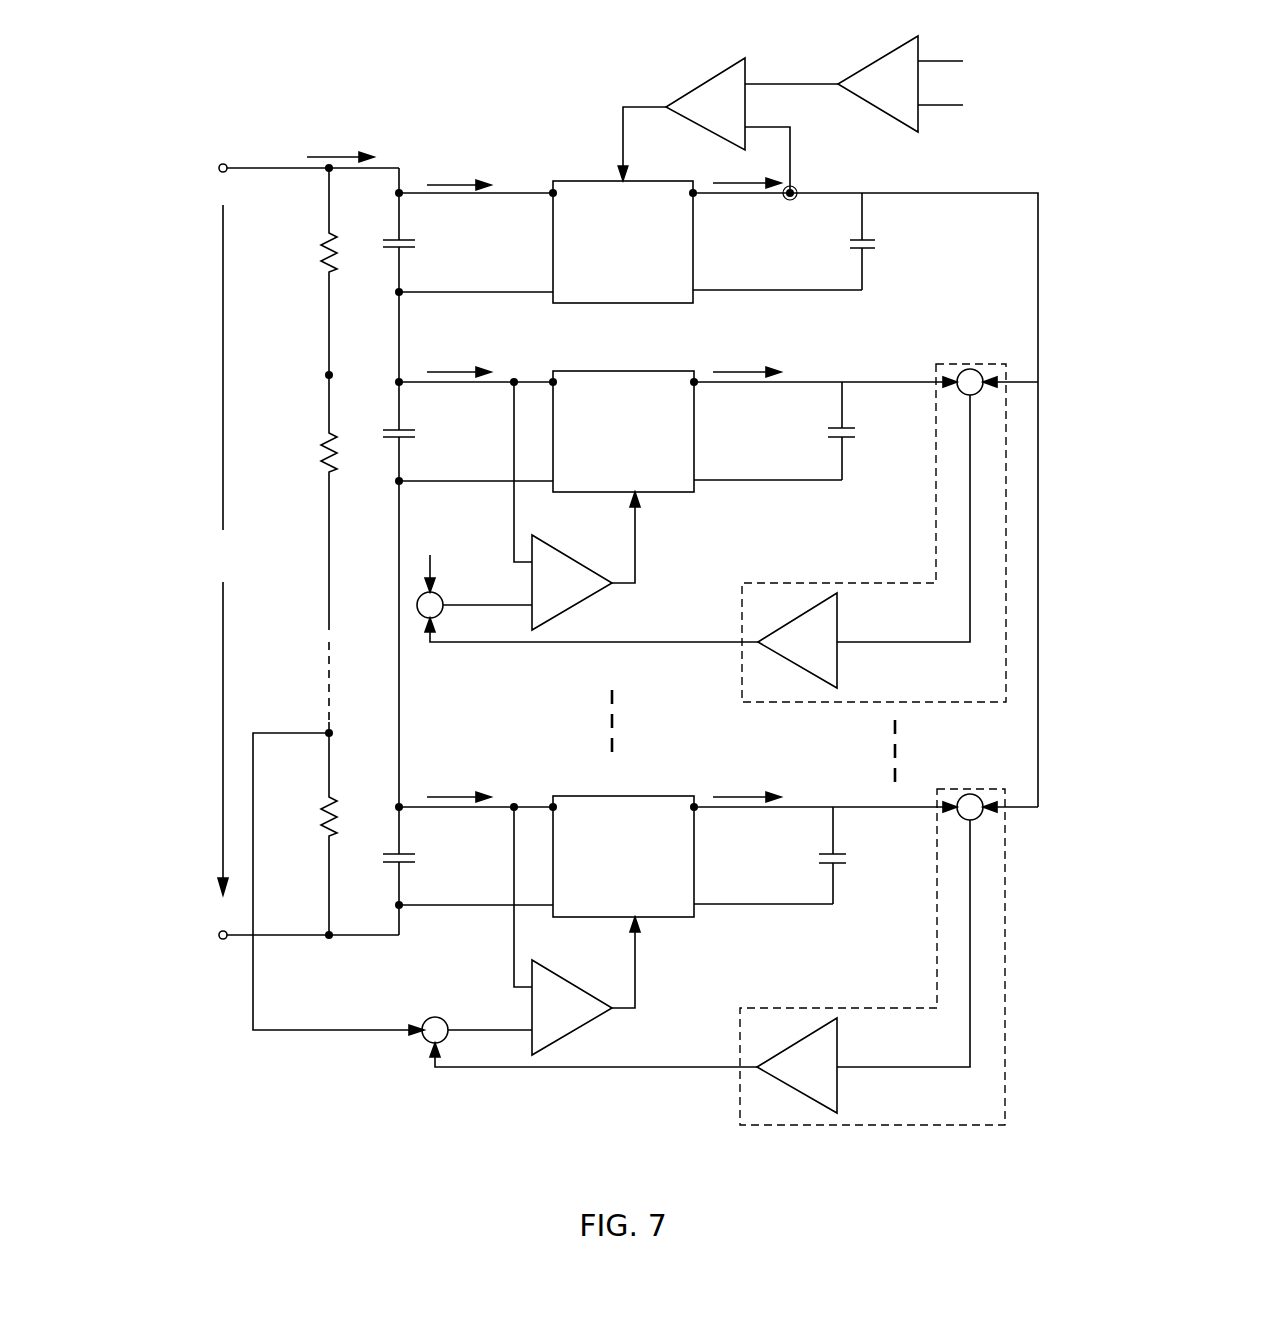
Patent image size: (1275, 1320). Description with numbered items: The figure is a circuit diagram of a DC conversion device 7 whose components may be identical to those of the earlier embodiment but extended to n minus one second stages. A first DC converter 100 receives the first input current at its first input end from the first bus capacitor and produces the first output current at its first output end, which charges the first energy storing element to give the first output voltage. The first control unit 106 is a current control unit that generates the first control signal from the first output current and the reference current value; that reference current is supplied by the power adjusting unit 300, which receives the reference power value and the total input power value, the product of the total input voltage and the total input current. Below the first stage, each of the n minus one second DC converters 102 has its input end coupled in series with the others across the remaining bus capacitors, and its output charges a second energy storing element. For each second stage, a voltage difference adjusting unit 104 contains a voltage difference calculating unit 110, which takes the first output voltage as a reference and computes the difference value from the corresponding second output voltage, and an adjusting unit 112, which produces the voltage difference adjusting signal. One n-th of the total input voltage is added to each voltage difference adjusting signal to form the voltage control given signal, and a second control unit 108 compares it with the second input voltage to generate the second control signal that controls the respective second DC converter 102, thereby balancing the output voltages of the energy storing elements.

The DC conversion device 7 is at (387, 29).
The first DC converter 100 is at (572, 181).
The second DC converter 102 is at (572, 371).
The voltage difference adjusting unit 104 is at (742, 690).
The first control unit 106 is at (702, 80).
The second control unit 108 is at (600, 600).
The voltage difference calculating unit 110 is at (986, 392).
The adjusting unit 112 is at (840, 663).
The power adjusting unit 300 is at (876, 60).